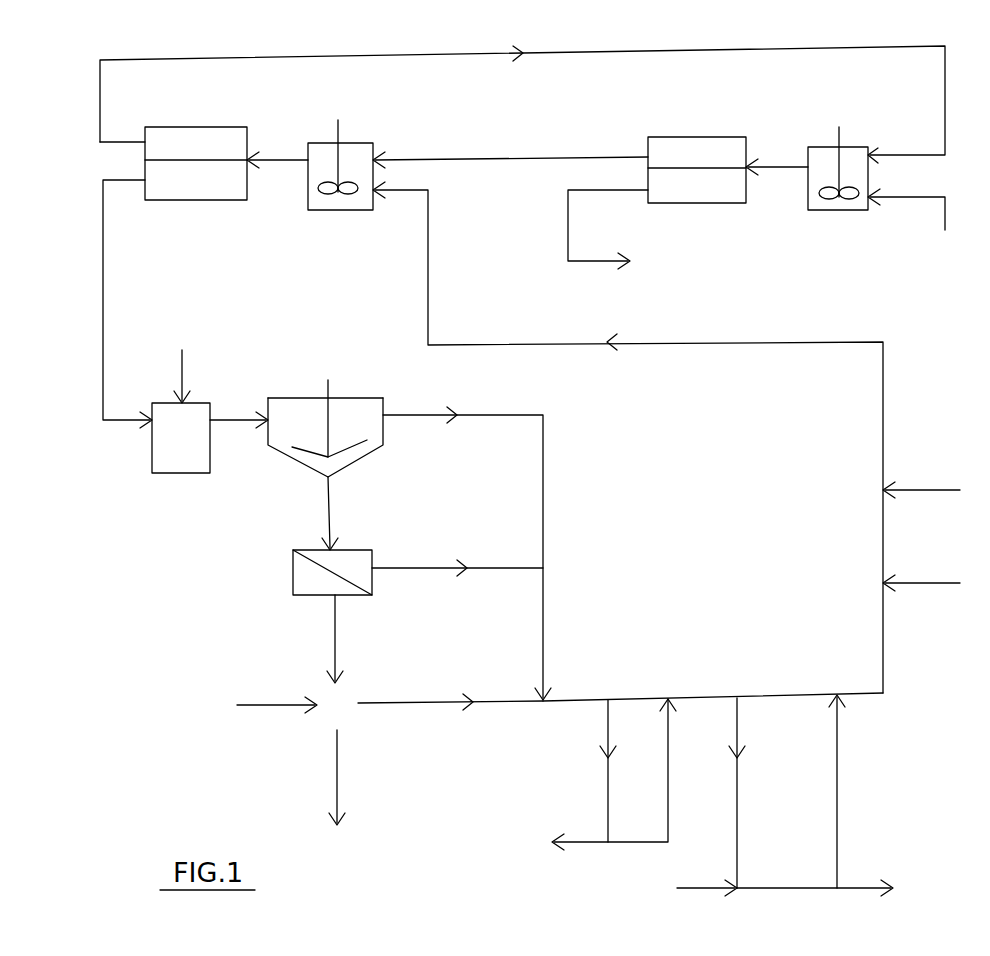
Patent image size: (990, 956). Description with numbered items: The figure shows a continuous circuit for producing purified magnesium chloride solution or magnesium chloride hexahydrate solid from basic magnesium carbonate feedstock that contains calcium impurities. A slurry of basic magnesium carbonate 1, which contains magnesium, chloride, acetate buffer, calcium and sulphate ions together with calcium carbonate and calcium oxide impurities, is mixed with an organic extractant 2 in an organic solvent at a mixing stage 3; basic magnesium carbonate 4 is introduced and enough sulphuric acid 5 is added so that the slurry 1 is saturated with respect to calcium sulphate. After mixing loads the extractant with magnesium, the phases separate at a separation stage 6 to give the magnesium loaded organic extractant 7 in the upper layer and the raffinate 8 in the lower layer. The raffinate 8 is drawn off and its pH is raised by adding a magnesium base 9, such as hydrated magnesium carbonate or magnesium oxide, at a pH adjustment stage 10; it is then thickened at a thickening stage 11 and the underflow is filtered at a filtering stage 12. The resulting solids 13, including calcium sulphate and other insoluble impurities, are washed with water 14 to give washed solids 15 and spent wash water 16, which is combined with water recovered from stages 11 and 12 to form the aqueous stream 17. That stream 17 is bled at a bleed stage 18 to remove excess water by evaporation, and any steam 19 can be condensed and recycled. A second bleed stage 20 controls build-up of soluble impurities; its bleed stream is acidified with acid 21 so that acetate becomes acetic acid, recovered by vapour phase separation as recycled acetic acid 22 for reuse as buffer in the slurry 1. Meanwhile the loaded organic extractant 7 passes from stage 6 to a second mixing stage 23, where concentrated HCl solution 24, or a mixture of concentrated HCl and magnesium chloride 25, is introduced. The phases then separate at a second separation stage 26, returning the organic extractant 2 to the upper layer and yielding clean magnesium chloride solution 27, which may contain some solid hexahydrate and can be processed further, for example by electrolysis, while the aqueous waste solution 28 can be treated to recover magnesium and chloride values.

The slurry of basic magnesium carbonate 1 is at (628, 437).
The organic extractant 2 is at (533, 149).
The mixing stage 3 is at (340, 181).
The basic magnesium carbonate 4 is at (931, 583).
The sulphuric acid 5 is at (931, 490).
The separation stage 6 is at (173, 277).
The magnesium loaded organic extractant 7 is at (173, 146).
The raffinate 8 is at (149, 301).
The magnesium base 9 is at (182, 362).
The pH adjustment stage 10 is at (181, 438).
The thickening stage 11 is at (325, 423).
The filtering stage 12 is at (313, 572).
The solids 13 is at (335, 657).
The water 14 is at (258, 706).
The washed solids 15 is at (335, 794).
The spent wash water 16 is at (450, 692).
The aqueous stream 17 is at (713, 686).
The bleed stage 18 is at (593, 771).
The steam 19 is at (592, 778).
The second bleed stage 20 is at (725, 793).
The acid 21 is at (690, 888).
The recycled acetic acid 22 is at (850, 791).
The second mixing stage 23 is at (838, 185).
The concentrated HCl solution 24 is at (922, 230).
The mixture of concentrated HCl and magnesium chloride 25 is at (906, 209).
The second separation stage 26 is at (697, 188).
The clean magnesium chloride solution 27 is at (635, 225).
The aqueous waste solution 28 is at (832, 888).